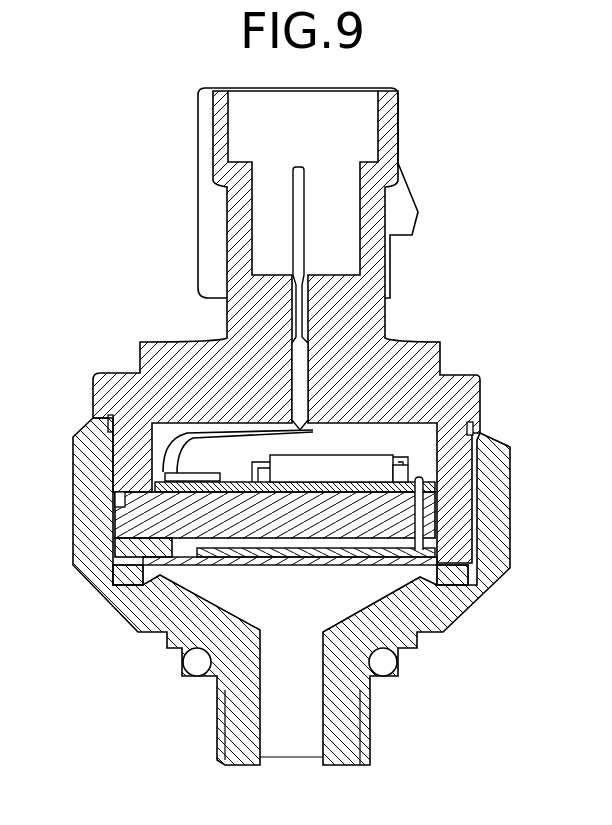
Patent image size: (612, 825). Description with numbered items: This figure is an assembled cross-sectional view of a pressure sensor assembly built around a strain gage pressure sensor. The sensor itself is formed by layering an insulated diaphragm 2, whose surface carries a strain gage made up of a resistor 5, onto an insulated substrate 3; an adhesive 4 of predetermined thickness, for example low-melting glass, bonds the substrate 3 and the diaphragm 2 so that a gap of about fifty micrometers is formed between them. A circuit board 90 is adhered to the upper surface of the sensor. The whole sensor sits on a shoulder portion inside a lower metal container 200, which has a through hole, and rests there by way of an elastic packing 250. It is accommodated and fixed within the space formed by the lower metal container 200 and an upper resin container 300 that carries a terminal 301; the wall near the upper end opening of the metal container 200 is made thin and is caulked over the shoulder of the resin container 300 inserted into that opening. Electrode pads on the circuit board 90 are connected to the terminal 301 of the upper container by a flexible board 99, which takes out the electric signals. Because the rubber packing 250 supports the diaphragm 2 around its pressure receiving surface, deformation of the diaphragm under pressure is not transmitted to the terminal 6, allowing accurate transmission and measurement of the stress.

The upper resin container 300 is at (365, 322).
The terminal 301 is at (303, 187).
The lower metal container 200 is at (133, 618).
The resistor 5 is at (392, 650).
The insulated substrate 3 is at (150, 522).
The insulated diaphragm 2 is at (160, 549).
The adhesive 4 is at (460, 546).
The elastic packing 250 is at (462, 598).
The circuit board 90 is at (150, 470).
The flexible board 99 is at (160, 440).
The terminal 6 is at (440, 472).